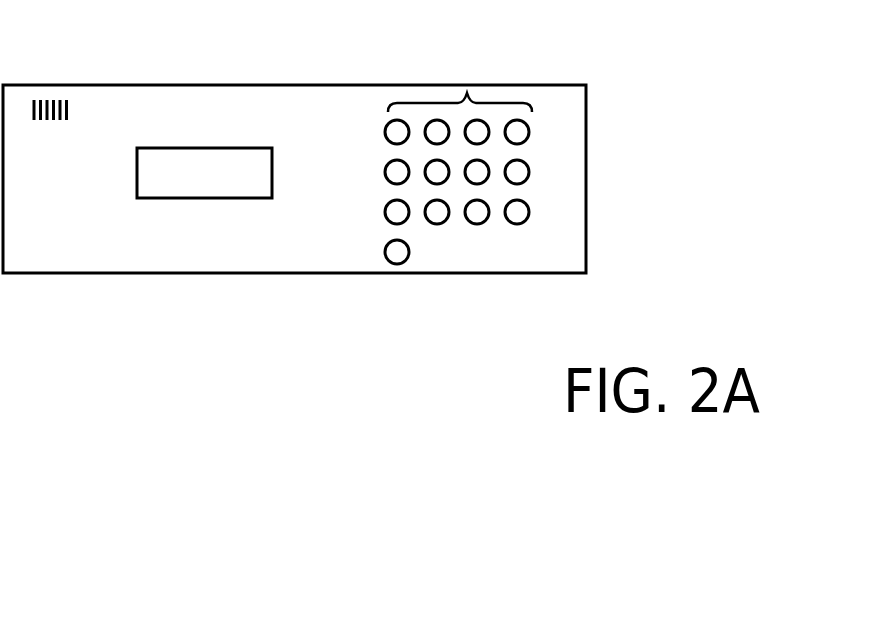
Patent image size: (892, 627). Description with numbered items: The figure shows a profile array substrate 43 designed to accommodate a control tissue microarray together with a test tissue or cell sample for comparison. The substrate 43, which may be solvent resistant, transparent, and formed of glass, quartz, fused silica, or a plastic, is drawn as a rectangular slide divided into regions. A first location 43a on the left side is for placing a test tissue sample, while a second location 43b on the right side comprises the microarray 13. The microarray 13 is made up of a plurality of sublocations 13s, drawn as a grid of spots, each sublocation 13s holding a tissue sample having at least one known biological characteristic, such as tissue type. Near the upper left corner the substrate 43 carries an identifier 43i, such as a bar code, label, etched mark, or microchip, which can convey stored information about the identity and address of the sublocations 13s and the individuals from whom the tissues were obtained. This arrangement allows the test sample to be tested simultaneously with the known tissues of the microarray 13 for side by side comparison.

The microarray 13 is at (435, 103).
The sublocation 13s is at (530, 130).
The microarray substrate 43 is at (313, 96).
The first location 43a is at (164, 262).
The second location 43b is at (473, 262).
The identifier 43i is at (43, 91).